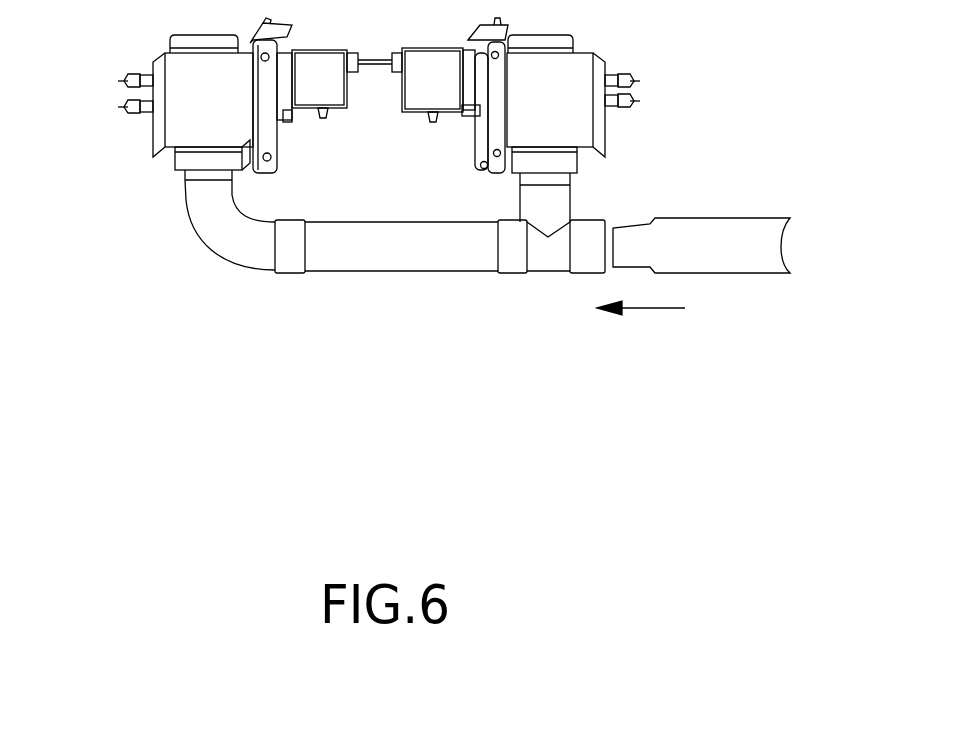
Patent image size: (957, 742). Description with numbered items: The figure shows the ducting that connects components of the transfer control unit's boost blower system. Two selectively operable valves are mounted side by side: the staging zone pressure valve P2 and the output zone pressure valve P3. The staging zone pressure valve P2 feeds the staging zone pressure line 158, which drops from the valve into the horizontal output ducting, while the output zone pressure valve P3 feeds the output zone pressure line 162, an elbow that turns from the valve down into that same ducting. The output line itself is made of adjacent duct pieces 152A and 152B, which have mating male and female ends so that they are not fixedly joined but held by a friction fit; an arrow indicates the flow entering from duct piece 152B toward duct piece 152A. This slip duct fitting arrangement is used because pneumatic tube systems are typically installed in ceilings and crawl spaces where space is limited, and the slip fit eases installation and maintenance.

The staging zone pressure valve P2 is at (597, 58).
The output zone pressure valve P3 is at (182, 118).
The staging zone pressure line 158 is at (558, 200).
The output zone pressure line 162 is at (200, 200).
The duct piece 152A is at (422, 253).
The duct piece 152B is at (738, 253).